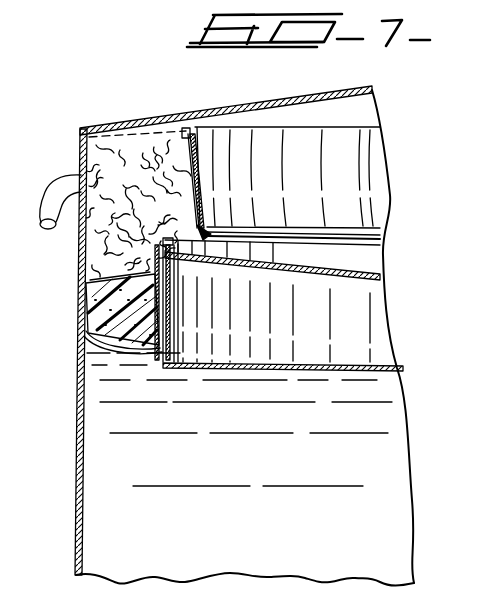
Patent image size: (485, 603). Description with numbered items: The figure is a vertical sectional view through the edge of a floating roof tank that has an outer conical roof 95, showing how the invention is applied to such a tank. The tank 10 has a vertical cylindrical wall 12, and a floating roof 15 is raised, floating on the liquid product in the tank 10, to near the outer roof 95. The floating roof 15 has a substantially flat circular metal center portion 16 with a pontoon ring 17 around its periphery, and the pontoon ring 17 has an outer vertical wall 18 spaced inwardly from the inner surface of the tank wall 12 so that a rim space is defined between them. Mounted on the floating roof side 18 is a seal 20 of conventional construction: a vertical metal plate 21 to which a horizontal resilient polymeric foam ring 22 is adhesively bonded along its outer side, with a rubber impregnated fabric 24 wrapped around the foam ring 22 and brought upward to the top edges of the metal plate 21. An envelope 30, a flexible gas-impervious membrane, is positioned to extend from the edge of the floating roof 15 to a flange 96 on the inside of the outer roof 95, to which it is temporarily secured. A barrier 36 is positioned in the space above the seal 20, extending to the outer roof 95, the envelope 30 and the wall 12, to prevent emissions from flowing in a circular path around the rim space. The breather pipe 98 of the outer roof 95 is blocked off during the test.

The tank 10 is at (70, 413).
The tank wall 12 is at (76, 487).
The floating roof 15 is at (332, 262).
The center portion 16 is at (380, 372).
The pontoon ring 17 is at (362, 268).
The outer vertical wall 18 is at (168, 282).
The seal 20 is at (100, 312).
The vertical metal plate 21 is at (168, 305).
The resilient polymeric foam ring 22 is at (170, 331).
The rubber impregnated fabric 24 is at (97, 345).
The envelope 30 is at (197, 204).
The barrier 36 is at (120, 168).
The outer conical roof 95 is at (232, 109).
The flange 96 is at (146, 128).
The breather pipe 98 is at (60, 186).